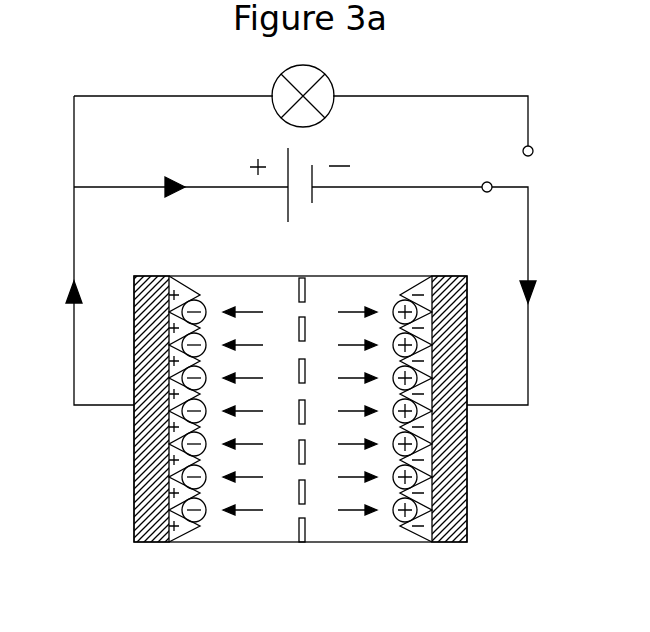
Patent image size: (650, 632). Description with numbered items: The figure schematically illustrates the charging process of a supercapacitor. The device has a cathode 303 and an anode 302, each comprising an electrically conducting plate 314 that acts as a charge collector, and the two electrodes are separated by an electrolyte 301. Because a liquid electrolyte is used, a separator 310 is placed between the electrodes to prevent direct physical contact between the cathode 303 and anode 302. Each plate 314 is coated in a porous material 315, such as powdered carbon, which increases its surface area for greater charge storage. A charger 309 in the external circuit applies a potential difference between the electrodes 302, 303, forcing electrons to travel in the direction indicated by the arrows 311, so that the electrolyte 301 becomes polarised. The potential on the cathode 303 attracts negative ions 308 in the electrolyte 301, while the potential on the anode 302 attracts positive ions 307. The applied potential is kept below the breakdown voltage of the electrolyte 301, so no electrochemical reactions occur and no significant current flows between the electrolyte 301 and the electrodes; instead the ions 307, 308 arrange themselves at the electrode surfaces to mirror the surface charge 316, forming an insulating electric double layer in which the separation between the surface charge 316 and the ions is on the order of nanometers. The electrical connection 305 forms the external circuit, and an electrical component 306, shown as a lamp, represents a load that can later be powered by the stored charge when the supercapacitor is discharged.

The electrolyte 301 is at (247, 527).
The anode 302 is at (488, 561).
The cathode 303 is at (100, 568).
The electrical connection 305 is at (445, 95).
The electrical component 306 is at (275, 92).
The positive ions 307 is at (408, 515).
The negative ions 308 is at (188, 515).
The charger 309 is at (333, 210).
The separator 310 is at (302, 533).
The arrows 311 is at (173, 180).
The electrically conducting plate 314 is at (138, 493).
The porous material 315 is at (176, 291).
The surface charge 316 is at (170, 460).